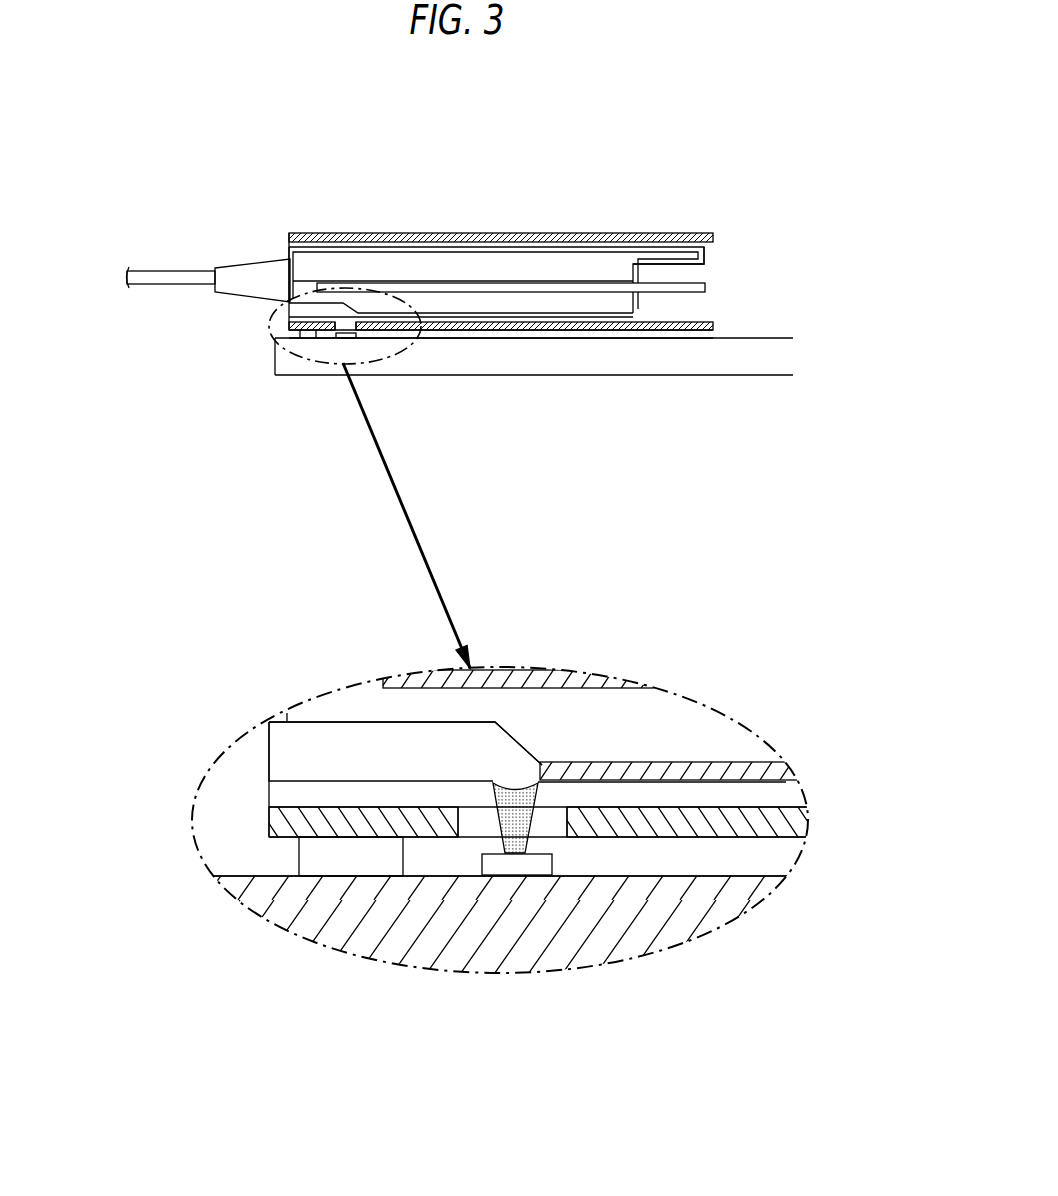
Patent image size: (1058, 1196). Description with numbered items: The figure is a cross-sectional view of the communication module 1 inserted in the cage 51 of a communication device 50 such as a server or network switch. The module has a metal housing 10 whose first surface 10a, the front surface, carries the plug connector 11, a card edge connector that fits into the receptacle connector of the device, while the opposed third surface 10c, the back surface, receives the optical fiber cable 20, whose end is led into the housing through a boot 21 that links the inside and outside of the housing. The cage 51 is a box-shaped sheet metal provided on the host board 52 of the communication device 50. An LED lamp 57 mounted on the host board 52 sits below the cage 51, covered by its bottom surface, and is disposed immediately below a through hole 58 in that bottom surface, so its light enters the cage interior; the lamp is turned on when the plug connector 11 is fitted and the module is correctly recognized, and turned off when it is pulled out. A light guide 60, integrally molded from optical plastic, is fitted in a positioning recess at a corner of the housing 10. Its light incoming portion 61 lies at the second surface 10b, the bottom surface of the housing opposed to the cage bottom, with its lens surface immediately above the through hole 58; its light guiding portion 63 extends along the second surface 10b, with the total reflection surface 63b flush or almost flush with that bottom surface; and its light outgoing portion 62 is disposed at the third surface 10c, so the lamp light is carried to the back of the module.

The communication module 1 is at (383, 208).
The housing 10 is at (582, 245).
The first surface 10a is at (640, 273).
The second surface 10b is at (600, 316).
The third surface 10c is at (290, 250).
The plug connector 11 is at (705, 287).
The optical fiber cable 20 is at (168, 278).
The boot 21 is at (235, 295).
The communication device 50 is at (778, 290).
The cage 51 is at (690, 335).
The host board 52 is at (763, 375).
The LED lamp 57 is at (347, 335).
The through hole 58 is at (375, 333).
The light guide 60 is at (305, 310).
The light incoming portion 61 is at (513, 870).
The light outgoing portion 62 is at (268, 762).
The light guiding portion 63 is at (455, 740).
The total reflection surface 63b is at (317, 783).